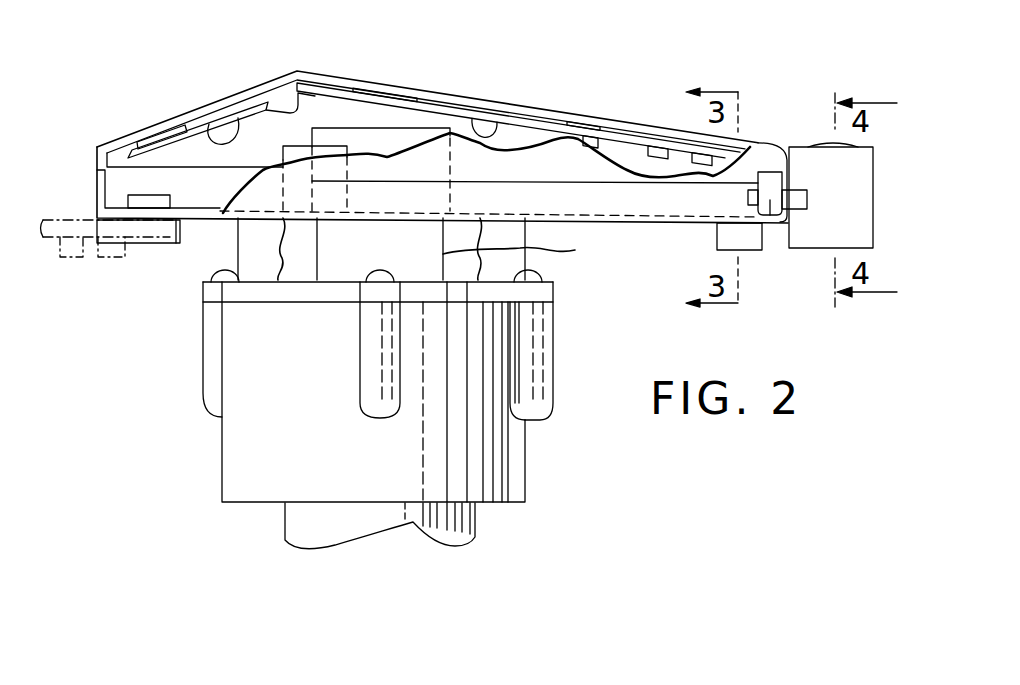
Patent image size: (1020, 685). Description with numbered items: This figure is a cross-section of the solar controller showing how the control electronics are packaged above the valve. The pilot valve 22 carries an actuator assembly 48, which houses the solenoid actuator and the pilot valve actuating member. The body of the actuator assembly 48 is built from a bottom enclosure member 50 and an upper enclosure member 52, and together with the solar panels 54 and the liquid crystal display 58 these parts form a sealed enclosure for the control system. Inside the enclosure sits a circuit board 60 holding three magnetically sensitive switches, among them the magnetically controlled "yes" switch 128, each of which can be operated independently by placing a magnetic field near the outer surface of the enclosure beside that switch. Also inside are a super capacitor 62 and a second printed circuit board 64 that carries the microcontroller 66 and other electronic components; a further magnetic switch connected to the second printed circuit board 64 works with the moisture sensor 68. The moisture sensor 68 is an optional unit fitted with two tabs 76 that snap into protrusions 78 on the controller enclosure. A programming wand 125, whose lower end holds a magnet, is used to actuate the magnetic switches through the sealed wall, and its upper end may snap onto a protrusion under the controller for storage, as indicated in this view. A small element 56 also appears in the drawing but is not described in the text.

The pilot valve 22 is at (505, 465).
The actuator assembly 48 is at (526, 253).
The bottom enclosure member 50 is at (197, 222).
The upper enclosure member 52 is at (121, 133).
The solar panels 54 is at (423, 100).
The electronic component 56 is at (690, 145).
The liquid crystal display 58 is at (194, 101).
The circuit board 60 is at (244, 100).
The super capacitor 62 is at (302, 148).
The second printed circuit board 64 is at (475, 115).
The microcontroller 66 is at (585, 143).
The moisture sensor 68 is at (811, 249).
The tabs 76 is at (748, 198).
The protrusions 78 is at (771, 208).
The wand 125 is at (69, 206).
The magnetically controlled "yes" switch 128 is at (165, 130).